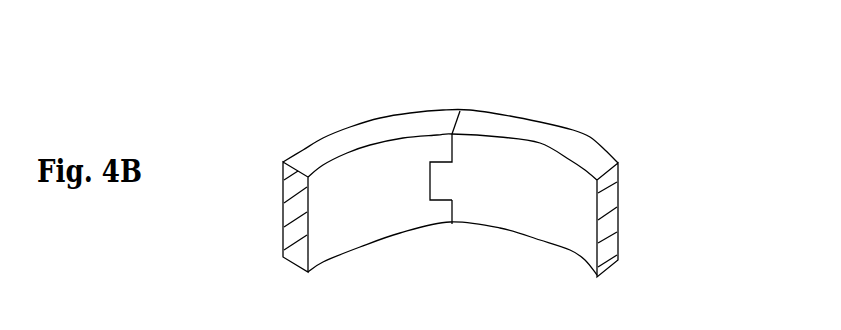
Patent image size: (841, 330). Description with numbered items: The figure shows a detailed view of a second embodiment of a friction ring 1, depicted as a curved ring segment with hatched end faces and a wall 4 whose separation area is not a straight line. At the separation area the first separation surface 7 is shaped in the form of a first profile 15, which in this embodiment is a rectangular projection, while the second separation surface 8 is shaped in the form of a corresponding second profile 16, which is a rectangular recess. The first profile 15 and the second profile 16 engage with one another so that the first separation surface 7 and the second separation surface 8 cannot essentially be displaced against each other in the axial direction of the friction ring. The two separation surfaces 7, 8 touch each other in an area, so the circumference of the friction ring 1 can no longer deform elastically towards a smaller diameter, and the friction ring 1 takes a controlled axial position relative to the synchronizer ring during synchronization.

The friction ring 1 is at (632, 103).
The ring wall 4 is at (510, 128).
The first separation surface 7 is at (456, 130).
The second separation surface 8 is at (443, 223).
The first profile 15 is at (436, 176).
The second profile 16 is at (428, 164).